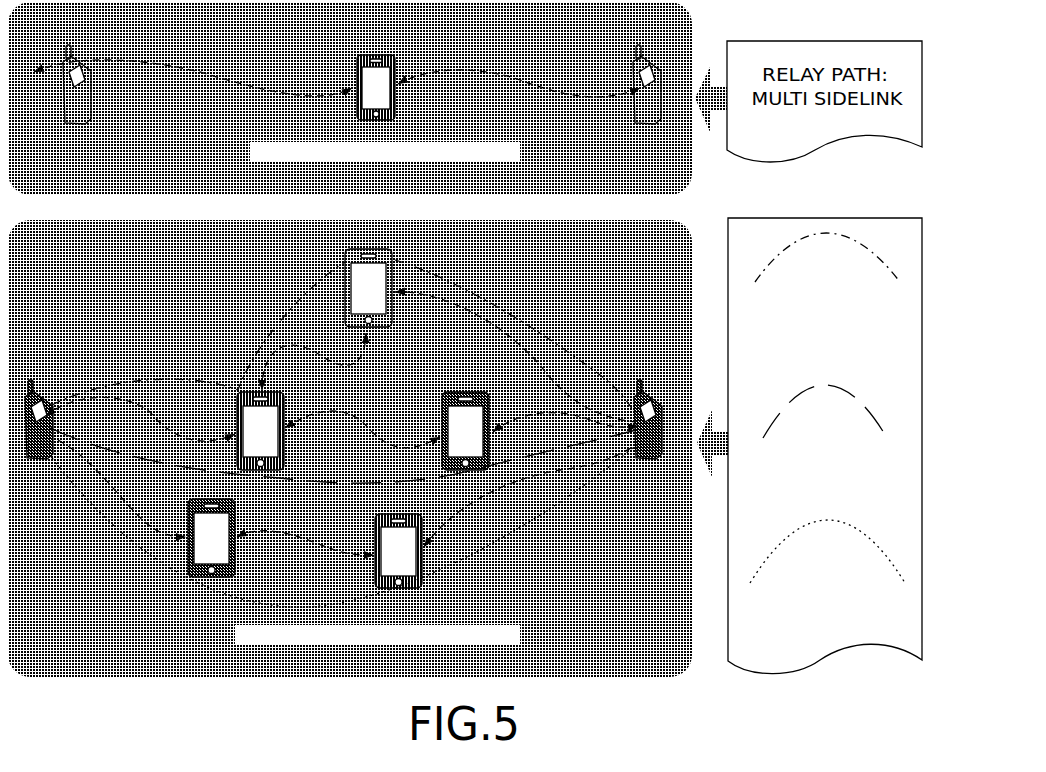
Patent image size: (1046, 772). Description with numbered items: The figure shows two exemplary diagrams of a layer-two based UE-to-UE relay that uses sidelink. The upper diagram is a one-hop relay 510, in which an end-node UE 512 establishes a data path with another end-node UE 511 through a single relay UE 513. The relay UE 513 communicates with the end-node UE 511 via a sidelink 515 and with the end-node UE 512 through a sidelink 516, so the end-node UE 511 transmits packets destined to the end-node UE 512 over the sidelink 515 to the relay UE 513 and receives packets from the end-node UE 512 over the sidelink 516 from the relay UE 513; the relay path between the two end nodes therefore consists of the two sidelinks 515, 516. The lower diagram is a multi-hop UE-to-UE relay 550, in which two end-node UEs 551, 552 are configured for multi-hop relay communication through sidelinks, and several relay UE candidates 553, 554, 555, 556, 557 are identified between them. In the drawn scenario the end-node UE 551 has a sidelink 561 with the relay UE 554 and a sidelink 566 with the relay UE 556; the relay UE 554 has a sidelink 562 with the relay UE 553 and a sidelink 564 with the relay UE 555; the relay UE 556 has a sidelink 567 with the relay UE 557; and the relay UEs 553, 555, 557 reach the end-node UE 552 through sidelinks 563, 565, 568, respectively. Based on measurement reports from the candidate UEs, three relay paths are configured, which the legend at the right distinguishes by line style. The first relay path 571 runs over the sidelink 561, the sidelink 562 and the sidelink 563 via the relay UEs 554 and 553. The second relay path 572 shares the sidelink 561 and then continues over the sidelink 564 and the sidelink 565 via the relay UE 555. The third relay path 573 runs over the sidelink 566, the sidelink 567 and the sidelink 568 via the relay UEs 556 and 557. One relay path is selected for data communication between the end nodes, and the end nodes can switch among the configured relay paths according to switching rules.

The one-hop relay 510 is at (370, 183).
The end-node UE 511 is at (94, 71).
The end-node UE 512 is at (639, 50).
The relay UE 513 is at (386, 55).
The sidelink 515 is at (193, 78).
The sidelink 516 is at (519, 83).
The multi-hop UE-to-UE relay 550 is at (361, 666).
The end-node UE 551 is at (48, 396).
The end-node UE 552 is at (650, 397).
The relay UE 553 is at (368, 288).
The relay UE 554 is at (260, 431).
The relay UE 555 is at (465, 431).
The relay UE 556 is at (211, 538).
The relay UE 557 is at (398, 551).
The sidelink 561 is at (140, 419).
The sidelink 562 is at (314, 361).
The sidelink 563 is at (515, 357).
The sidelink 564 is at (362, 426).
The sidelink 565 is at (565, 417).
The sidelink 566 is at (122, 488).
The sidelink 567 is at (305, 548).
The sidelink 568 is at (530, 496).
The relay path-1 571 is at (810, 331).
The relay path-2 572 is at (810, 486).
The relay path-3 573 is at (810, 631).